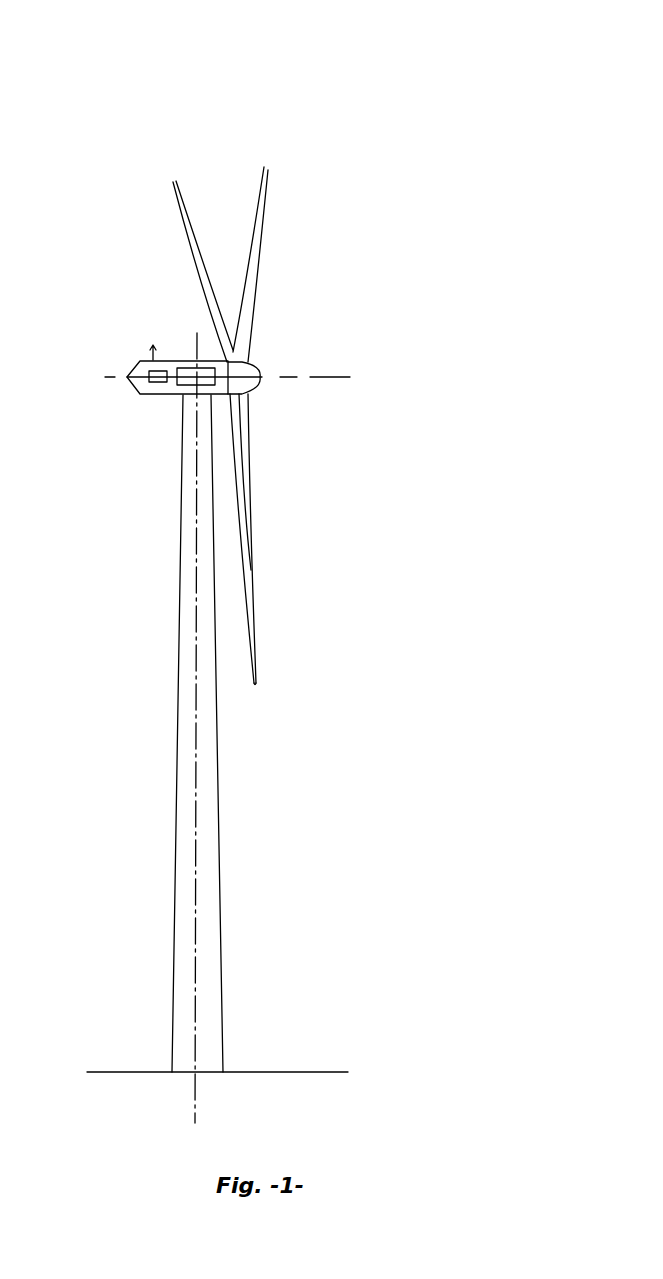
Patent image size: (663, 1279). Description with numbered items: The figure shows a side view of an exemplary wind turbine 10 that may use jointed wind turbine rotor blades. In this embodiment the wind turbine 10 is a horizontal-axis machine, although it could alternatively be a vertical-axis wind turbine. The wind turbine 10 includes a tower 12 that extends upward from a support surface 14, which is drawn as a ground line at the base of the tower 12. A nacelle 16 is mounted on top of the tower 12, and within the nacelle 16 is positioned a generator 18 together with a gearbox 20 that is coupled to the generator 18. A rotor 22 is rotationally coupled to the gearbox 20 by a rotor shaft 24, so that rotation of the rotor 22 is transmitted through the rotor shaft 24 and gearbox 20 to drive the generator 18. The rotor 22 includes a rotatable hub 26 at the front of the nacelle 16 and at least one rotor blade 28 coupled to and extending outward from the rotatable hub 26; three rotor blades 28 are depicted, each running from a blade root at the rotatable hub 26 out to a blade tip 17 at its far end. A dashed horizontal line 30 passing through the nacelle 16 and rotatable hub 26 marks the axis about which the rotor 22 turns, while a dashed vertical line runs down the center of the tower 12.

The wind turbine 10 is at (414, 71).
The tower 12 is at (176, 836).
The support surface 14 is at (128, 1070).
The nacelle 16 is at (150, 394).
The blade tip 17 is at (257, 686).
The generator 18 is at (143, 361).
The gearbox 20 is at (182, 359).
The rotor 22 is at (266, 362).
The rotor shaft 24 is at (210, 398).
The rotatable hub 26 is at (258, 383).
The rotor blade 28 is at (195, 237).
The rotor axis 30 is at (318, 379).